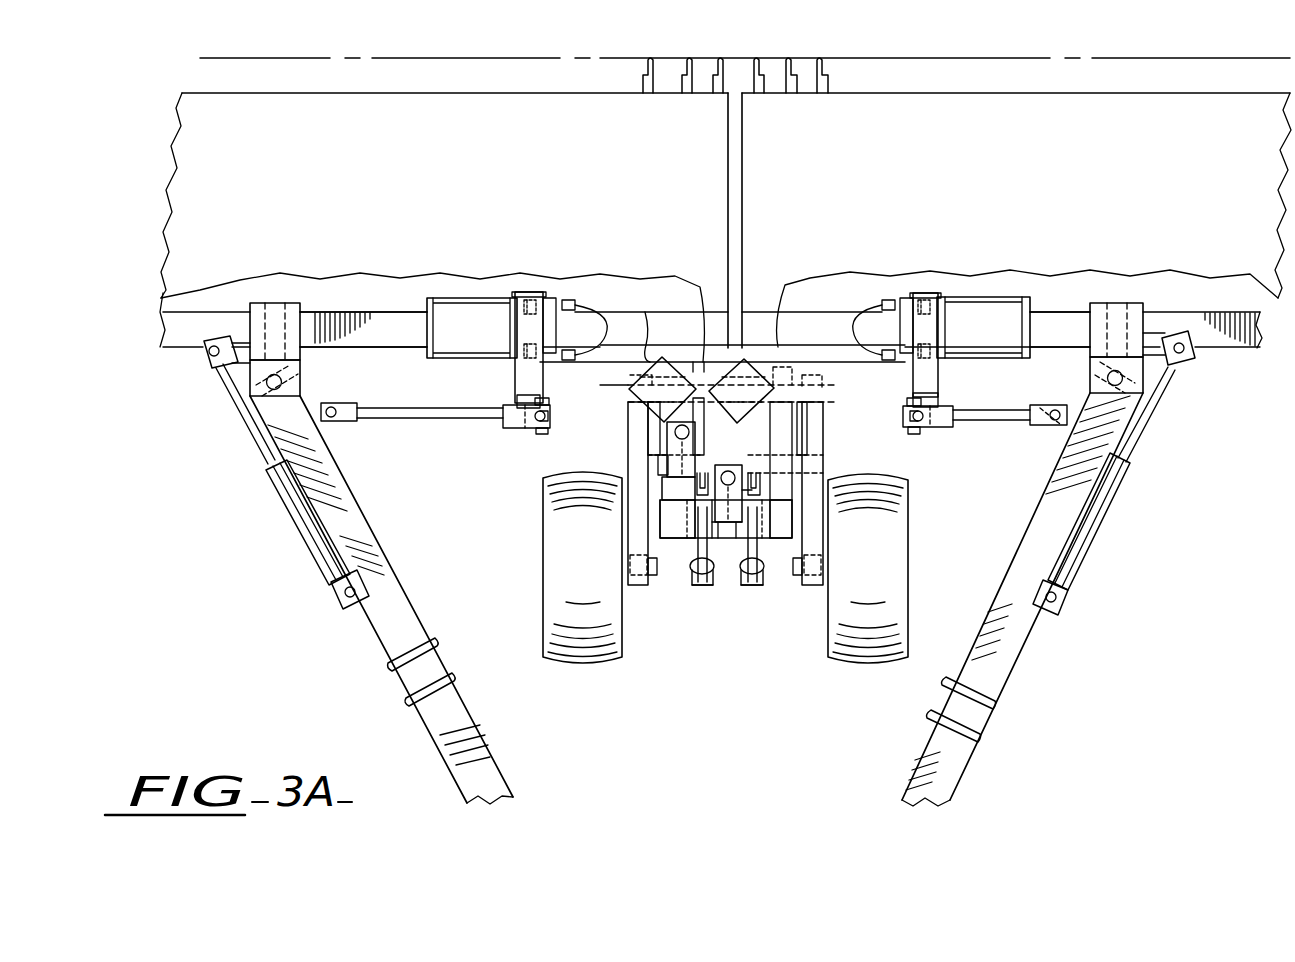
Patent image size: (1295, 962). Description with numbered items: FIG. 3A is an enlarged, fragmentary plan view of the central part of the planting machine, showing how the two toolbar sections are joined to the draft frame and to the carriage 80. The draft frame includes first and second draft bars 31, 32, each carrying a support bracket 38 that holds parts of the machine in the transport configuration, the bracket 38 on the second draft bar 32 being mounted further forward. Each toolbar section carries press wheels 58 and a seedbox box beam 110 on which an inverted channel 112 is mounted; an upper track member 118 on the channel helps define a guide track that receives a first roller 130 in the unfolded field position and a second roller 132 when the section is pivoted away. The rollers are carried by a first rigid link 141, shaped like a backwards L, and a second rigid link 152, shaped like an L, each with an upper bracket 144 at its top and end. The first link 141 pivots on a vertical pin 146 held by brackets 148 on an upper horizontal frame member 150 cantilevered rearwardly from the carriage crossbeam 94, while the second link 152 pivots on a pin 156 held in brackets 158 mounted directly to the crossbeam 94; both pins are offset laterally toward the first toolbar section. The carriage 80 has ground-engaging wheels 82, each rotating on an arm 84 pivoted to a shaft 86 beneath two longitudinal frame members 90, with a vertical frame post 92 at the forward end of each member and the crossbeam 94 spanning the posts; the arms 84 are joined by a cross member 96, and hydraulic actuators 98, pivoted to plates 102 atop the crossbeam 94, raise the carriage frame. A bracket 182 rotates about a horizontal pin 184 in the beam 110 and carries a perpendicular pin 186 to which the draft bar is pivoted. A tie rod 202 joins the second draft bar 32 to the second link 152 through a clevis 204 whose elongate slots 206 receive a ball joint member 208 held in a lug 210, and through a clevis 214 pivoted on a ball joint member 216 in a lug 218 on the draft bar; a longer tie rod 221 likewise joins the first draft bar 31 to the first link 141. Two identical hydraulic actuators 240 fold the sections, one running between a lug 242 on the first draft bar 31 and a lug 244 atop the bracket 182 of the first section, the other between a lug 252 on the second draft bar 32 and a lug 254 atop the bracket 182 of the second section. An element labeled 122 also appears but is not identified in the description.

The first draft bar 31 is at (452, 697).
The second draft bar 32 is at (940, 742).
The bracket 38 is at (400, 713).
The press wheels 58 is at (822, 58).
The carriage 80 is at (604, 453).
The ground-engaging wheels 82 is at (545, 582).
The arm 84 is at (628, 532).
The shaft 86 is at (828, 394).
The longitudinal frame members 90 is at (648, 442).
The vertical frame post 92 is at (660, 548).
The crossbeam 94 is at (726, 537).
The crossbeam 96 is at (762, 458).
The hydraulic cylinder-piston actuators 98 is at (690, 545).
The plate 102 is at (758, 592).
The box beam 110 is at (342, 313).
The inverted channel 112 is at (492, 298).
The upper track member 118 is at (463, 353).
The beam section 122 is at (420, 312).
The first roller 130 is at (528, 300).
The second roller 132 is at (600, 322).
The first rigid link 141 is at (685, 378).
The upper bracket 144 is at (548, 325).
The pin 146 is at (658, 436).
The brackets 148 is at (667, 462).
The upper horizontal frame member 150 is at (664, 490).
The second rigid link 152 is at (748, 382).
The pin 156 is at (728, 466).
The brackets 158 is at (748, 492).
The bracket 182 is at (313, 365).
The pin 184 is at (255, 307).
The pin 186 is at (284, 381).
The tie rod 202 is at (980, 420).
The clevis 204 is at (507, 428).
The elongate slots 206 is at (540, 405).
The ball joint member 208 is at (533, 428).
The lug 210 is at (519, 408).
The clevis 214 is at (349, 423).
The ball joint member 216 is at (345, 410).
The lug 218 is at (258, 434).
The tie rod 221 is at (405, 418).
The hydraulic cylinder-piston actuators 240 is at (306, 536).
The lug 242 is at (335, 606).
The lug 244 is at (222, 342).
The lug 252 is at (1065, 600).
The lug 254 is at (1168, 335).